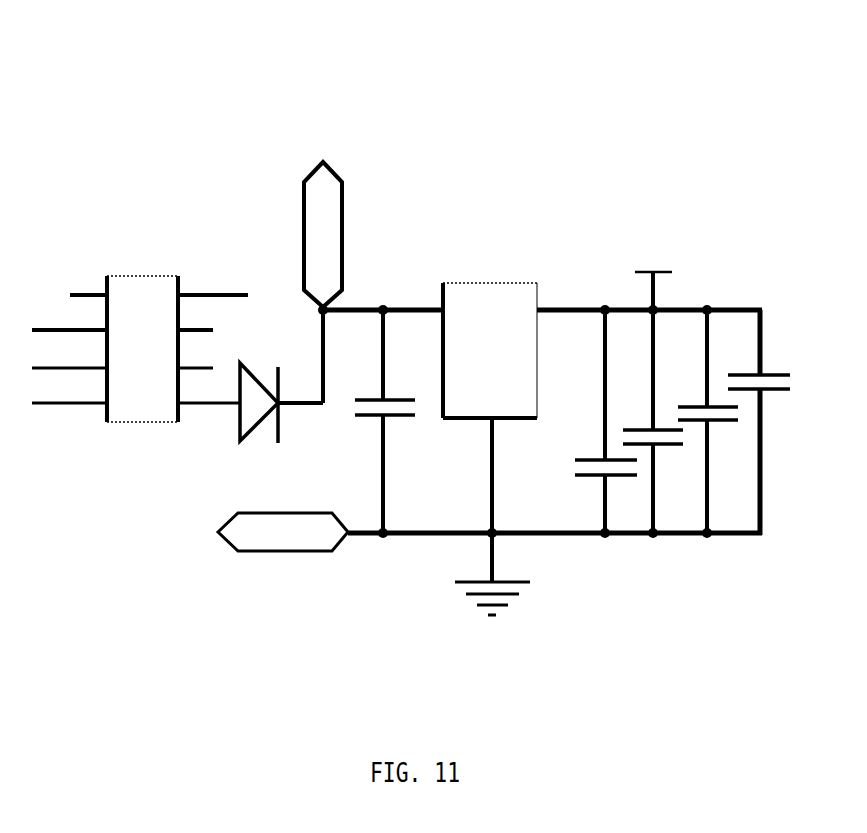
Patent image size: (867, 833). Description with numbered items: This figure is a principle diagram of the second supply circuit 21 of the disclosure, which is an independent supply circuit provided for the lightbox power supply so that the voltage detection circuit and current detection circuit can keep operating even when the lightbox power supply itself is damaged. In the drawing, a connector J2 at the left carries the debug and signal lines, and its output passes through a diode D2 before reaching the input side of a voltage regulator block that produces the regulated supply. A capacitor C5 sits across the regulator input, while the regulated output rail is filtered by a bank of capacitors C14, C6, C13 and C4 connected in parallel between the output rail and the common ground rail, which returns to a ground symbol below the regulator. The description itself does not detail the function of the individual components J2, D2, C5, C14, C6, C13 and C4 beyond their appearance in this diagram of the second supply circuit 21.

The second supply circuit 21 is at (483, 228).
The debug connector J2 is at (140, 348).
The diode D2 is at (259, 393).
The capacitor C5 is at (383, 421).
The capacitor C14 is at (603, 421).
The capacitor C6 is at (653, 402).
The capacitor C13 is at (705, 421).
The capacitor C4 is at (759, 373).